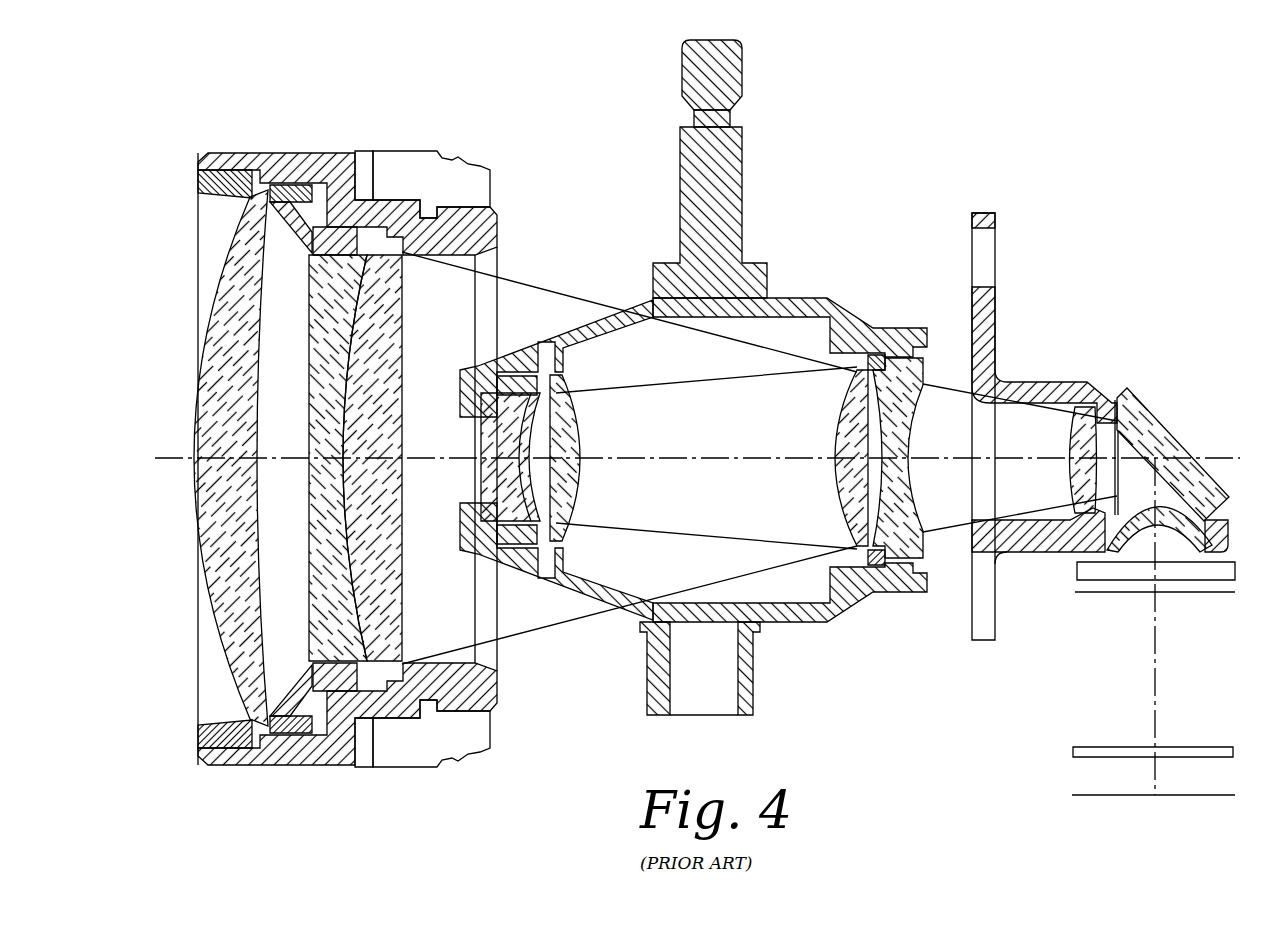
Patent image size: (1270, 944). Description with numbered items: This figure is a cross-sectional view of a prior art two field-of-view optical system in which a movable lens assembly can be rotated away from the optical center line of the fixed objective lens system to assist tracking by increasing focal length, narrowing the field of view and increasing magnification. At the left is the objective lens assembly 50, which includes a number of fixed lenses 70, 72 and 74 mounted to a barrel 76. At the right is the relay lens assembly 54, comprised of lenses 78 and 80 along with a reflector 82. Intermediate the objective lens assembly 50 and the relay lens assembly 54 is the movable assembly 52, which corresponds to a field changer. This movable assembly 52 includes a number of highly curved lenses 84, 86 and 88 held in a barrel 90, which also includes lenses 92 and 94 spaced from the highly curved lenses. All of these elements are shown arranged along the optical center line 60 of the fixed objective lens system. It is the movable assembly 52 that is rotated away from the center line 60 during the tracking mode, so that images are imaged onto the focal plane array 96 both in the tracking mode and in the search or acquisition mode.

The objective lens assembly 50 is at (406, 140).
The movable assembly 52 is at (907, 316).
The relay lens assembly 54 is at (1216, 432).
The center line 60 is at (705, 463).
The lens 70 is at (203, 344).
The lens 72 is at (317, 344).
The lens 74 is at (393, 345).
The barrel 76 is at (497, 217).
The lens 78 is at (1068, 440).
The lens 80 is at (1138, 540).
The reflector 82 is at (1153, 418).
The highly curved lens 84 is at (481, 472).
The highly curved lens 86 is at (512, 392).
The highly curved lens 88 is at (578, 434).
The barrel 90 is at (617, 308).
The lens 92 is at (843, 415).
The lens 94 is at (902, 490).
The focal plane array 96 is at (1085, 795).